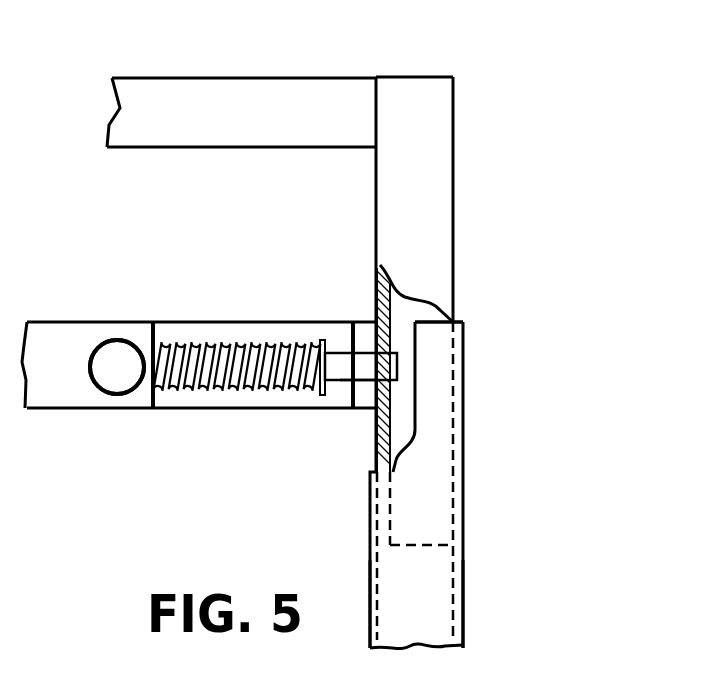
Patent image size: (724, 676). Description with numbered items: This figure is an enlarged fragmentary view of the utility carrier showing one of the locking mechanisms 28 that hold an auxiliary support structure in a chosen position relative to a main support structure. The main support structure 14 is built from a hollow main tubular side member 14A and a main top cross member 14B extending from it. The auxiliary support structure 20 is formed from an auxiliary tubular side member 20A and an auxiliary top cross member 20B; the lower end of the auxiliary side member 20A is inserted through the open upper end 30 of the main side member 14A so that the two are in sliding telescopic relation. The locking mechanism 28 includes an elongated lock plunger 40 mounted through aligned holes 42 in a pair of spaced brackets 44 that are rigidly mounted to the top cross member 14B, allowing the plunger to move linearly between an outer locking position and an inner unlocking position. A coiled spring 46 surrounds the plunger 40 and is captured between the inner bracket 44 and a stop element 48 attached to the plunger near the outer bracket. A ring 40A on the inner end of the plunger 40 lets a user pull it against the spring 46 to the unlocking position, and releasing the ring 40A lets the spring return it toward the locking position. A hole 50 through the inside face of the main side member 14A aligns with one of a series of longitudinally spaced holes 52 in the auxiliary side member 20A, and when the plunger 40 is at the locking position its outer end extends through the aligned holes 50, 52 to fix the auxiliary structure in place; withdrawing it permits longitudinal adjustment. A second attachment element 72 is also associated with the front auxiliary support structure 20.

The front main support structure 14 is at (465, 478).
The main tubular side member 14A is at (463, 590).
The main top cross member 14B is at (213, 408).
The front auxiliary support structure 20 is at (455, 153).
The auxiliary tubular side member 20A is at (453, 207).
The auxiliary top cross member 20B is at (185, 78).
The locking mechanism 28 is at (223, 300).
The open upper end 30 is at (427, 318).
The lock plunger 40 is at (333, 347).
The ring 40A is at (110, 400).
The aligned holes 42 is at (345, 387).
The bracket 44 is at (353, 327).
The coiled spring 46 is at (207, 353).
The stop element 48 is at (322, 343).
The hole 50 is at (368, 388).
The longitudinally spaced holes 52 is at (377, 300).
The second attachment element 72 is at (147, 357).